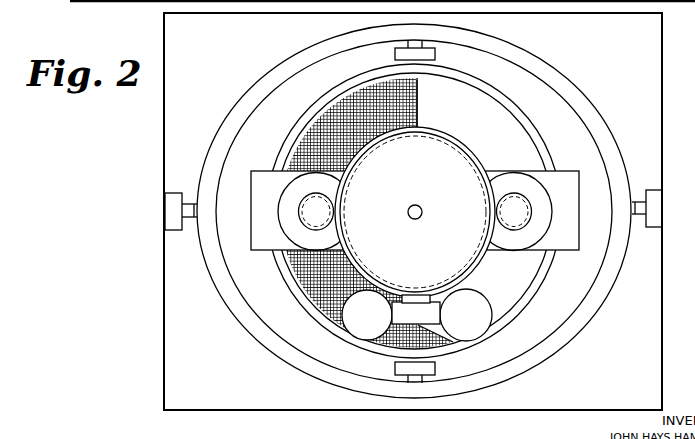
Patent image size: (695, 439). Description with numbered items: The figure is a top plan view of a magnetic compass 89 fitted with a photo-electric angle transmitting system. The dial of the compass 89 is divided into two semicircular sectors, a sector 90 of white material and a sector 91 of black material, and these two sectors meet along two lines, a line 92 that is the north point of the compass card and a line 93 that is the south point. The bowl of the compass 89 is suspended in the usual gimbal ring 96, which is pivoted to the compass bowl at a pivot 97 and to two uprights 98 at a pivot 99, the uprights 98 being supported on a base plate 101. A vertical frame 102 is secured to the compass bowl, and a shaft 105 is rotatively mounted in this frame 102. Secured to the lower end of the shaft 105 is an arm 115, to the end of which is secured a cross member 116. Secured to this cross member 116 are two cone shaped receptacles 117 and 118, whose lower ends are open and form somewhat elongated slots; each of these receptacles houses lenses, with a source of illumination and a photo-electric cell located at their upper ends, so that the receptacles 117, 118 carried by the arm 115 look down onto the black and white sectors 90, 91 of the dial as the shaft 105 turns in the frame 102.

The magnetic compass 89 is at (618, 381).
The white sector 90 is at (498, 125).
The black sector 91 is at (313, 138).
The north point line 92 is at (418, 327).
The south point line 93 is at (413, 100).
The gimbal ring 96 is at (257, 342).
The bowl pivot 97 is at (409, 45).
The uprights 98 is at (177, 192).
The upright pivot 99 is at (192, 218).
The base plate 101 is at (296, 403).
The vertical frame 102 is at (264, 244).
The shaft 105 is at (422, 207).
The arm 115 is at (423, 298).
The cross member 116 is at (403, 300).
The cone shaped receptacle 117 is at (477, 303).
The cone shaped receptacle 118 is at (355, 323).